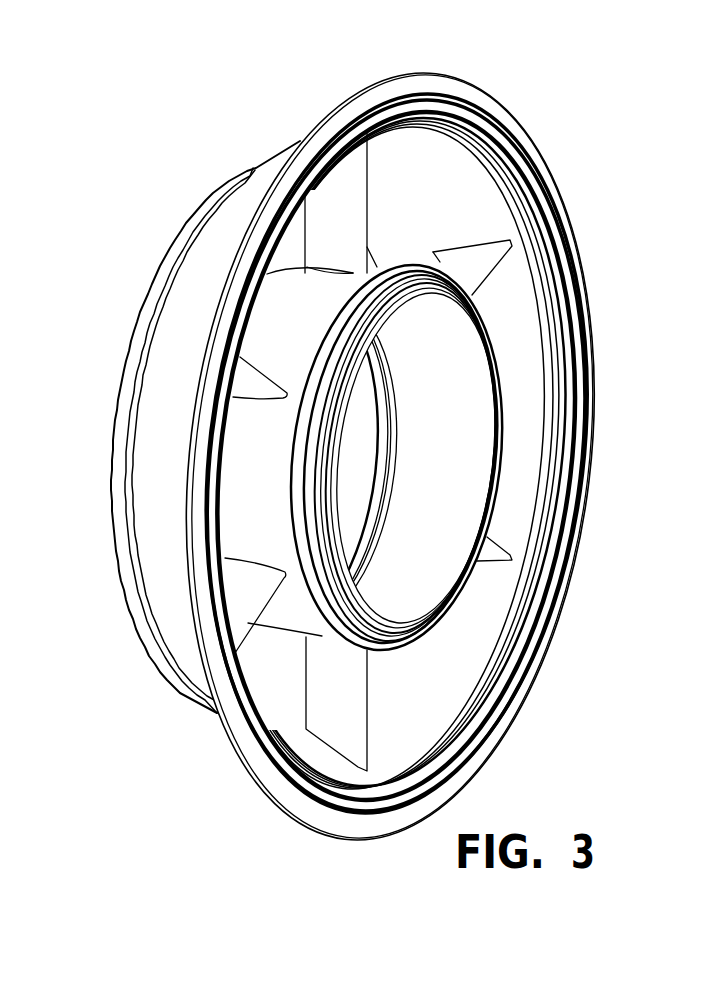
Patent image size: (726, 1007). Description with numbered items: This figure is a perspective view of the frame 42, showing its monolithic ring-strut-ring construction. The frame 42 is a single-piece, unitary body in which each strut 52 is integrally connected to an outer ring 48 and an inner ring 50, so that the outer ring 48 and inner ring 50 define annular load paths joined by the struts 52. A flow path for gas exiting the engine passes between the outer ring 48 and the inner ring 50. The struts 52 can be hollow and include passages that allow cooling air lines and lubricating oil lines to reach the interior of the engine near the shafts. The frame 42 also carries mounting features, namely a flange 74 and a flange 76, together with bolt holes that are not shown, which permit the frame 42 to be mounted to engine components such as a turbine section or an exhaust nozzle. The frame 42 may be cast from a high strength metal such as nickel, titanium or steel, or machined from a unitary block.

The frame 42 is at (350, 439).
The outer ring 48 is at (152, 532).
The inner ring 50 is at (240, 440).
The strut 52 is at (362, 220).
The flange 74 is at (420, 262).
The flange 76 is at (467, 75).